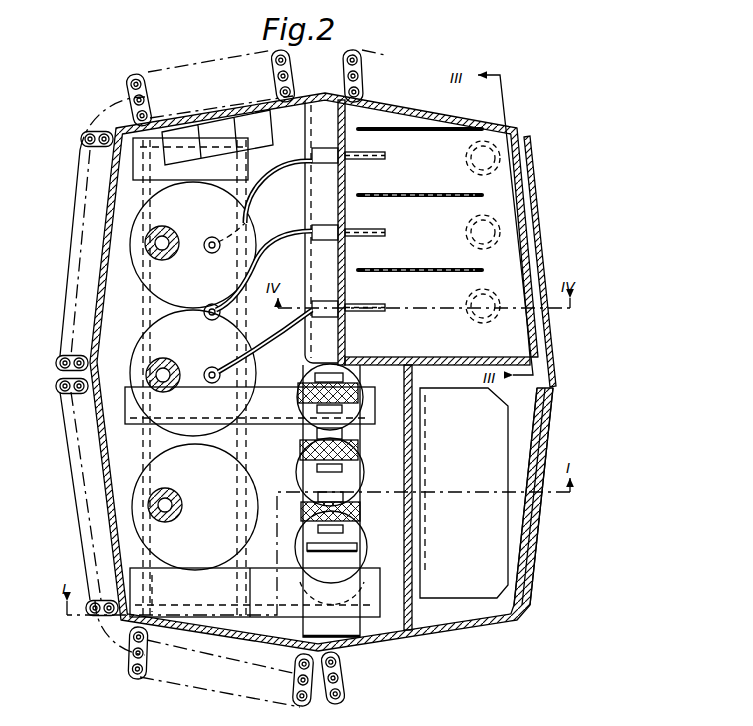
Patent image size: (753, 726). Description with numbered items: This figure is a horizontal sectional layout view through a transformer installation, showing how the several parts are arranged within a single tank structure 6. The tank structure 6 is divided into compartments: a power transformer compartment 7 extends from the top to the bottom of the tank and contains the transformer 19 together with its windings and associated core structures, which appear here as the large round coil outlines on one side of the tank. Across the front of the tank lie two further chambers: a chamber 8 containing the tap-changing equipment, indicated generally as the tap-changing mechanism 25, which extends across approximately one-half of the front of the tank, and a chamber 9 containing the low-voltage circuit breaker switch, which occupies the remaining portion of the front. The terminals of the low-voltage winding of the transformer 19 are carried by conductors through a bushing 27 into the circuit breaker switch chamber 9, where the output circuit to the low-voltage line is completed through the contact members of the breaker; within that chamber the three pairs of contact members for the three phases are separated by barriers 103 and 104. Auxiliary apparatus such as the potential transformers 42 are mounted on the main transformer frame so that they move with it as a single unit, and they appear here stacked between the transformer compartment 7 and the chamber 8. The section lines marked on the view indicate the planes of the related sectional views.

The tank structure 6 is at (100, 300).
The power transformer compartment 7 is at (110, 277).
The chamber 8 is at (525, 400).
The chamber 9 is at (455, 232).
The transformer 19 is at (130, 233).
The tap-changing mechanism 25 is at (515, 540).
The bushing 27 is at (320, 152).
The potential transformers 42 is at (362, 465).
The barrier 103 is at (473, 269).
The barrier 104 is at (453, 189).